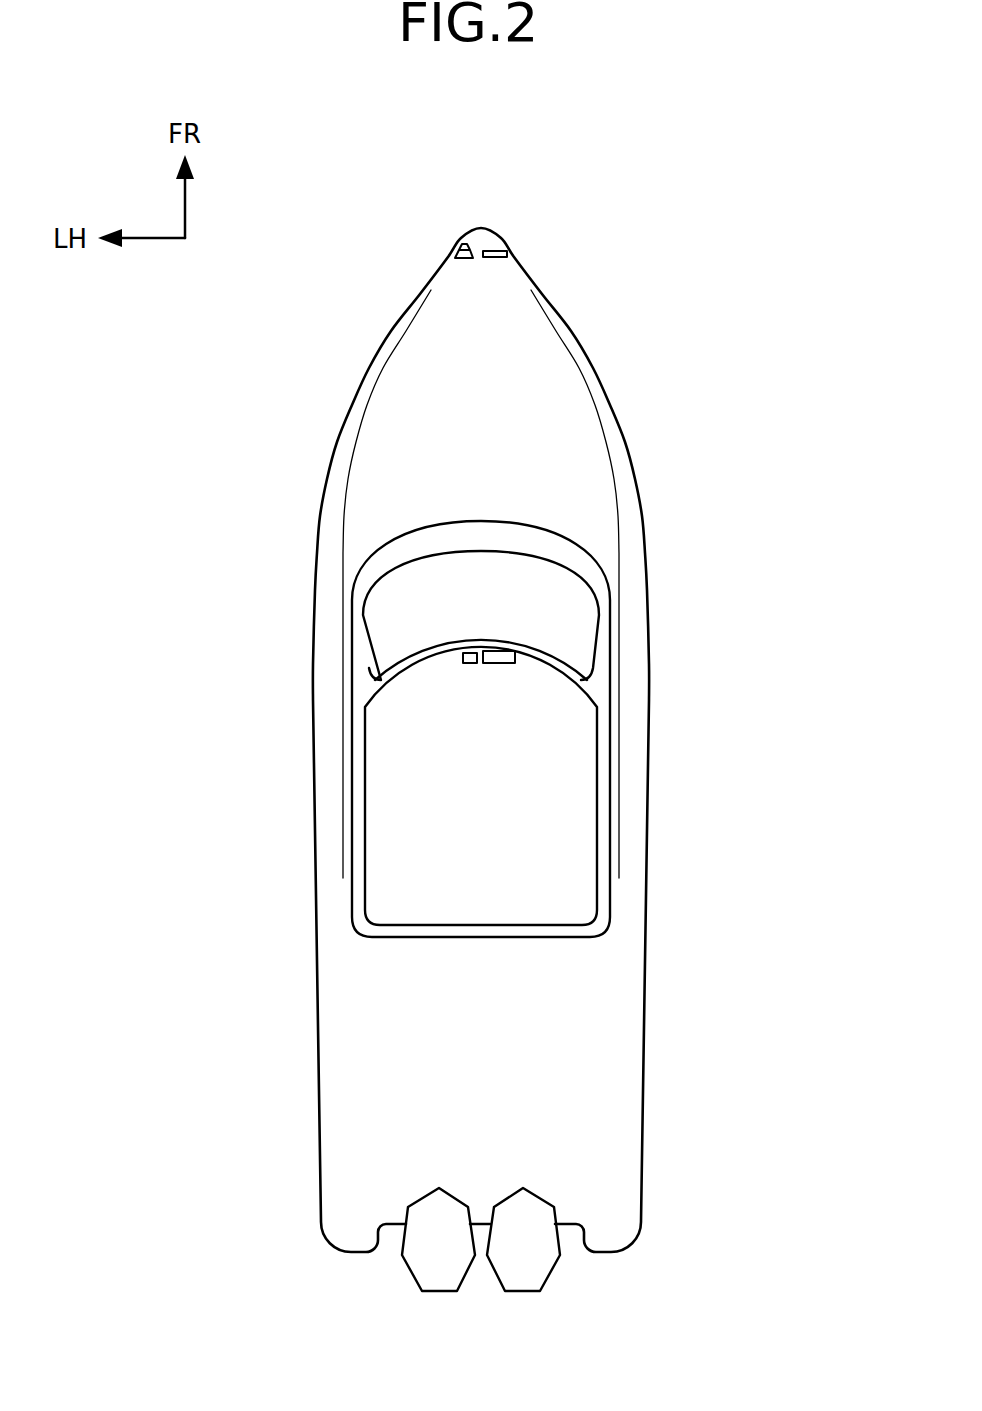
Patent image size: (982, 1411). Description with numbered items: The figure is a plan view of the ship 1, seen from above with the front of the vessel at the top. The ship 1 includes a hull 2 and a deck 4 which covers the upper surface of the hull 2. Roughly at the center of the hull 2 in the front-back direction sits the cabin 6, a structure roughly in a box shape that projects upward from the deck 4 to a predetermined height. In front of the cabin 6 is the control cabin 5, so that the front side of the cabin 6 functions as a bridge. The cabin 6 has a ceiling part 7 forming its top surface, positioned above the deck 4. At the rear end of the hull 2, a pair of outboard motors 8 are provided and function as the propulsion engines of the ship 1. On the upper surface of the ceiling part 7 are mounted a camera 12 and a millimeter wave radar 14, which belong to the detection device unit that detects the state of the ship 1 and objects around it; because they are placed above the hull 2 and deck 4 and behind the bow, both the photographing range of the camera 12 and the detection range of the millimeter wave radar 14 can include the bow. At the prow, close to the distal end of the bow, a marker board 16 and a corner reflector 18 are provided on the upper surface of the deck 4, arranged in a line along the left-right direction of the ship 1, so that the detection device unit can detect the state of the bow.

The ship 1 is at (778, 176).
The hull 2 is at (650, 668).
The deck 4 is at (618, 470).
The control cabin 5 is at (573, 610).
The cabin 6 is at (607, 807).
The ceiling part 7 is at (580, 890).
The outboard motor 8 is at (463, 1285).
The camera 12 is at (511, 664).
The millimeter wave radar 14 is at (468, 664).
The marker board 16 is at (508, 254).
The corner reflector 18 is at (455, 255).